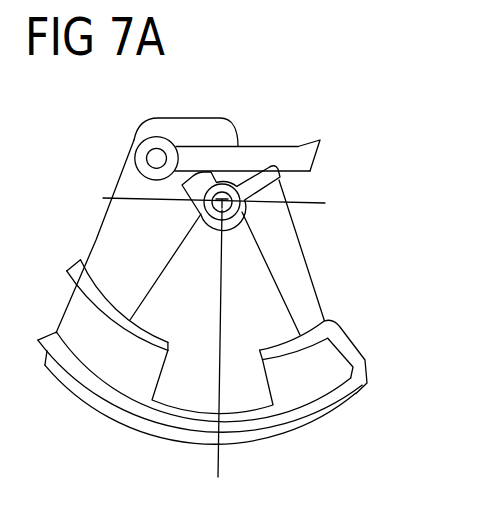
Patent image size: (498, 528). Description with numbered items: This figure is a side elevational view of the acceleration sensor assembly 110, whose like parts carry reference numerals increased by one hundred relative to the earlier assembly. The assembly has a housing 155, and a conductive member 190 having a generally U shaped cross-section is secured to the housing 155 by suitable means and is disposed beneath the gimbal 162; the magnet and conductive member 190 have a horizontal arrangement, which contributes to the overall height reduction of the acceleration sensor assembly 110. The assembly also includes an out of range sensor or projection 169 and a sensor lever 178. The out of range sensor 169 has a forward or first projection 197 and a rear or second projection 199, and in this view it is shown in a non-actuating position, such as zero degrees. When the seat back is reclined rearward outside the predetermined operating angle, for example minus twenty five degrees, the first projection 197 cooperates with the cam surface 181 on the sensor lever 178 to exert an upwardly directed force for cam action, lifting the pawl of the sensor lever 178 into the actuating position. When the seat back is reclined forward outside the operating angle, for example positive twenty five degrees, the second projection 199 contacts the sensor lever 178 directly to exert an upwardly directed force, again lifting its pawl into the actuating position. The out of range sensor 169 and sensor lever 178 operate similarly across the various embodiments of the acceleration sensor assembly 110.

The acceleration sensor assembly 110 is at (115, 105).
The second projection 199 is at (184, 186).
The sensor lever 178 is at (223, 156).
The cam surface 181 is at (265, 157).
The first projection 197 is at (283, 182).
The out of range sensor 169 is at (242, 208).
The housing 155 is at (298, 263).
The gimbal 162 is at (250, 320).
The conductive member 190 is at (350, 345).